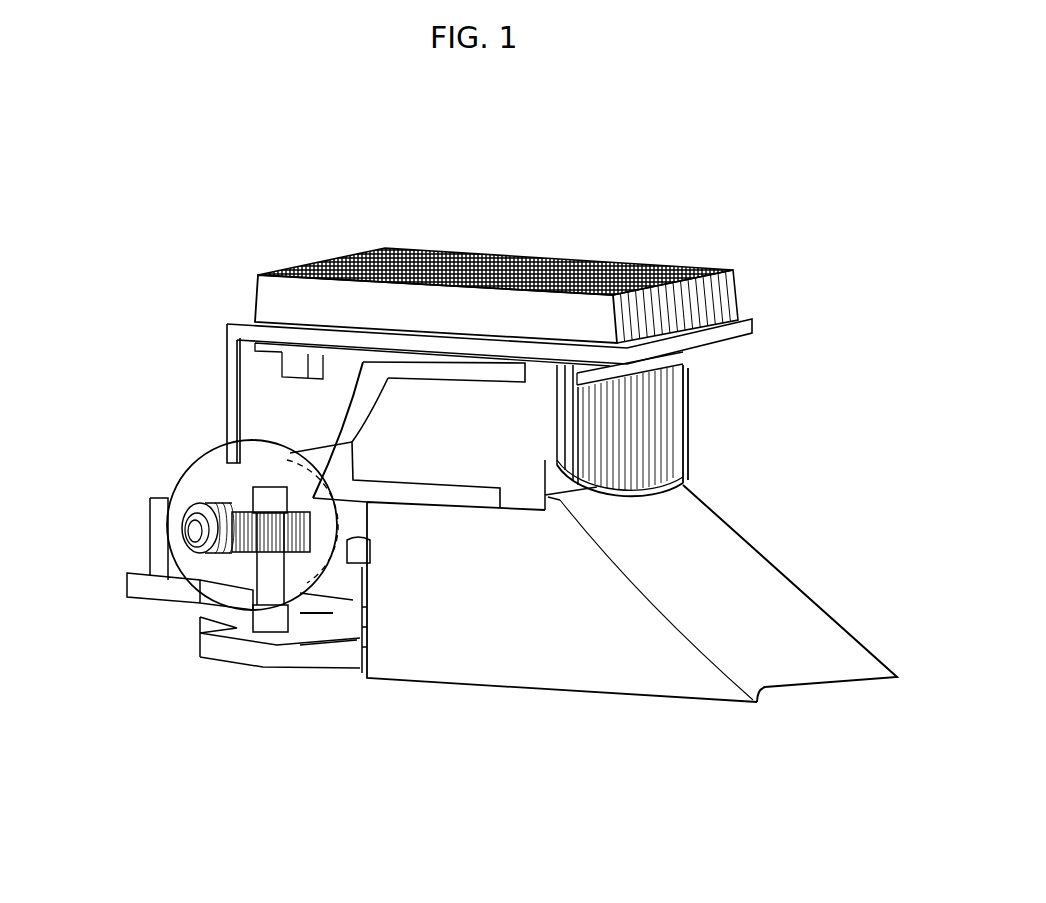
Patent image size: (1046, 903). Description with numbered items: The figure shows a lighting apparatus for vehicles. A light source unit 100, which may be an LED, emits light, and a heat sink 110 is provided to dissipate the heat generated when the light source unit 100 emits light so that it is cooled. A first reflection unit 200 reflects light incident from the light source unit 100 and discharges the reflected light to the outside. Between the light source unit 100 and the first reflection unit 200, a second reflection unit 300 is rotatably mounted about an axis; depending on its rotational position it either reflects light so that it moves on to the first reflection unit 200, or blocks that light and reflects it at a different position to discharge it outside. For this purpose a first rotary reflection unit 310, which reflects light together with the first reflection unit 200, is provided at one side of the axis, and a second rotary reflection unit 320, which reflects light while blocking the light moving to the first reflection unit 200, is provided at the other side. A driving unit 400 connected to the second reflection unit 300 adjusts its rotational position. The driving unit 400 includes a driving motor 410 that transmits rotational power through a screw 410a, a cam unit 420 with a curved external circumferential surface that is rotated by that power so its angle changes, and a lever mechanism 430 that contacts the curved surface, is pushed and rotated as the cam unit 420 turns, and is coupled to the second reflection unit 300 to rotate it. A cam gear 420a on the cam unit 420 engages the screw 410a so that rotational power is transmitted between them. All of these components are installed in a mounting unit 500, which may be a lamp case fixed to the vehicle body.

The light source unit 100 is at (594, 362).
The heat sink 110 is at (640, 262).
The first reflection unit 200 is at (762, 590).
The second reflection unit 300 is at (684, 437).
The first rotary reflection unit 310 is at (372, 395).
The second rotary reflection unit 320 is at (683, 452).
The driving unit 400 is at (229, 583).
The driving motor 410 is at (212, 496).
The screw 410a is at (195, 528).
The cam unit 420 is at (280, 634).
The cam gear 420a is at (299, 548).
The lever mechanism 430 is at (355, 565).
The mounting unit 500 is at (135, 586).